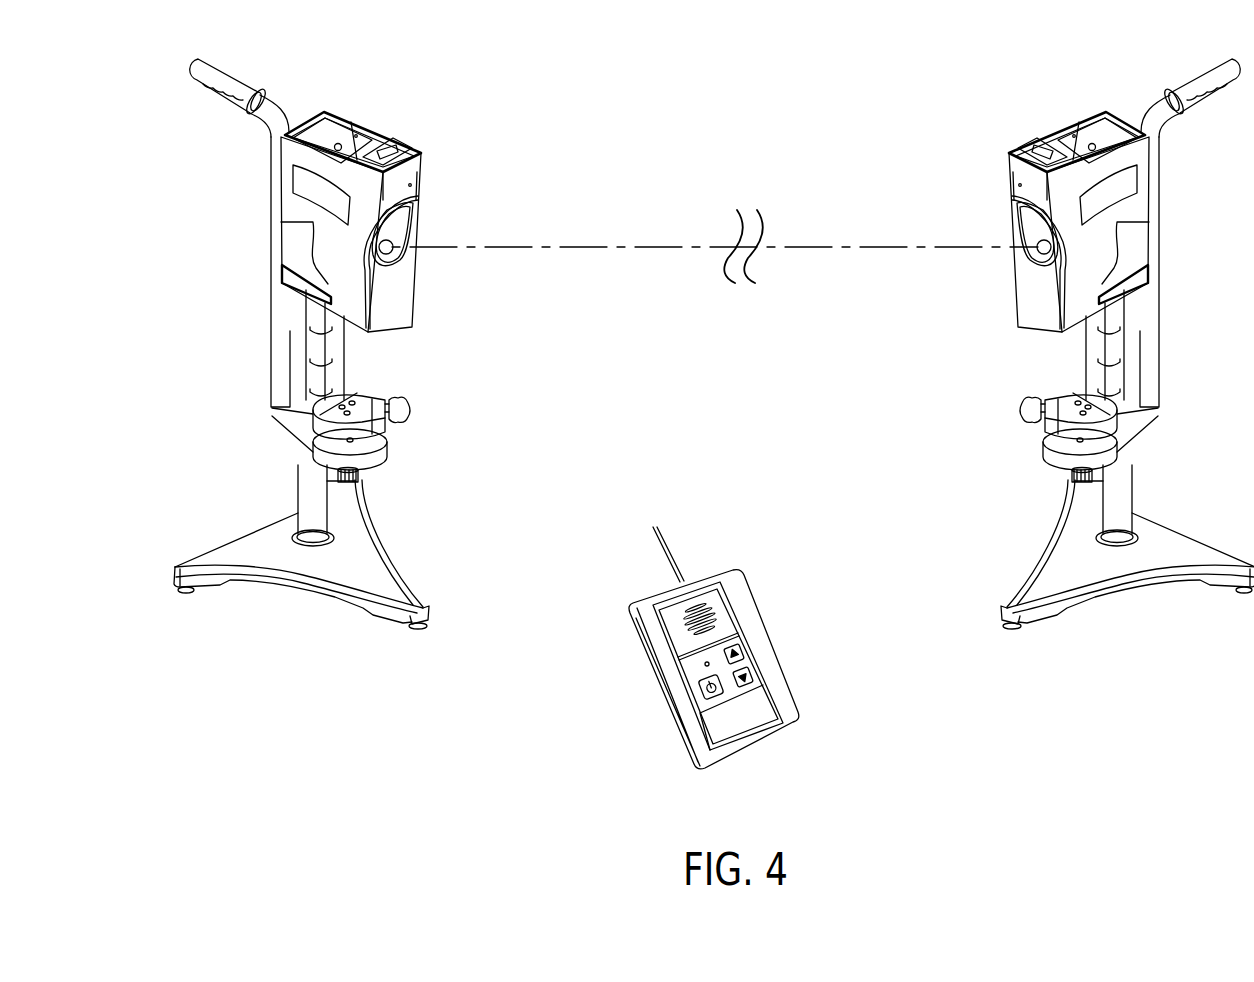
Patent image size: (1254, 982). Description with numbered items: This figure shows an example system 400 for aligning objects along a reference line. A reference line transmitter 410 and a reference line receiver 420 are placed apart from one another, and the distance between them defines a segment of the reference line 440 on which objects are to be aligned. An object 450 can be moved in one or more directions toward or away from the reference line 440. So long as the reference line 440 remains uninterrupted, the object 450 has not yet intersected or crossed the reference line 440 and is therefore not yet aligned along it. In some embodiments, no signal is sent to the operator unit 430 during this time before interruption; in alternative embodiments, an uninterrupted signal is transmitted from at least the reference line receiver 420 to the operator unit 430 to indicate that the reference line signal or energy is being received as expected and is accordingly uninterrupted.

The system 400 is at (777, 122).
The reference line transmitter 410 is at (328, 98).
The reference line receiver 420 is at (1108, 99).
The operator unit 430 is at (774, 608).
The reference line 440 is at (578, 247).
The object 450 is at (750, 215).